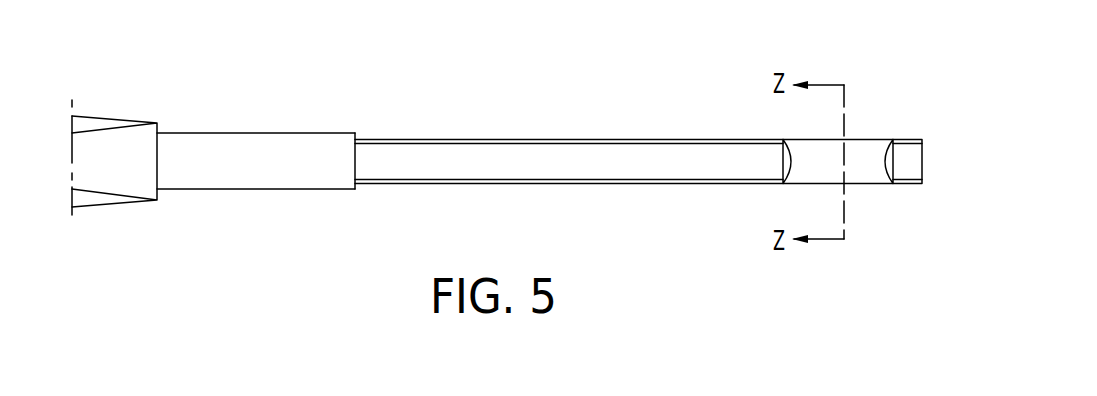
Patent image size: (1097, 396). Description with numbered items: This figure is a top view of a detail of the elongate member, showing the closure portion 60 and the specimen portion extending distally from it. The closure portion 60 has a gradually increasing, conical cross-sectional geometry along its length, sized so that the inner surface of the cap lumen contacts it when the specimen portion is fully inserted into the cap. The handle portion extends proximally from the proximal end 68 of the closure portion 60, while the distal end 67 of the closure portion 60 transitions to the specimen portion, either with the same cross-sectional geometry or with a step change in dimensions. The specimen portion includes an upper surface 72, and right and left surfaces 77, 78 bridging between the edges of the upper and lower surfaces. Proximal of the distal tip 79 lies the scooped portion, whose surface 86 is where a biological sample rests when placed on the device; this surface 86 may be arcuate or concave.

The closure portion 60 is at (265, 182).
The distal end 67 is at (355, 189).
The proximal end 68 is at (158, 131).
The upper surface 72 is at (645, 150).
The right surface 77 is at (692, 185).
The left surface 78 is at (726, 139).
The distal tip 79 is at (904, 150).
The surface 86 is at (856, 153).